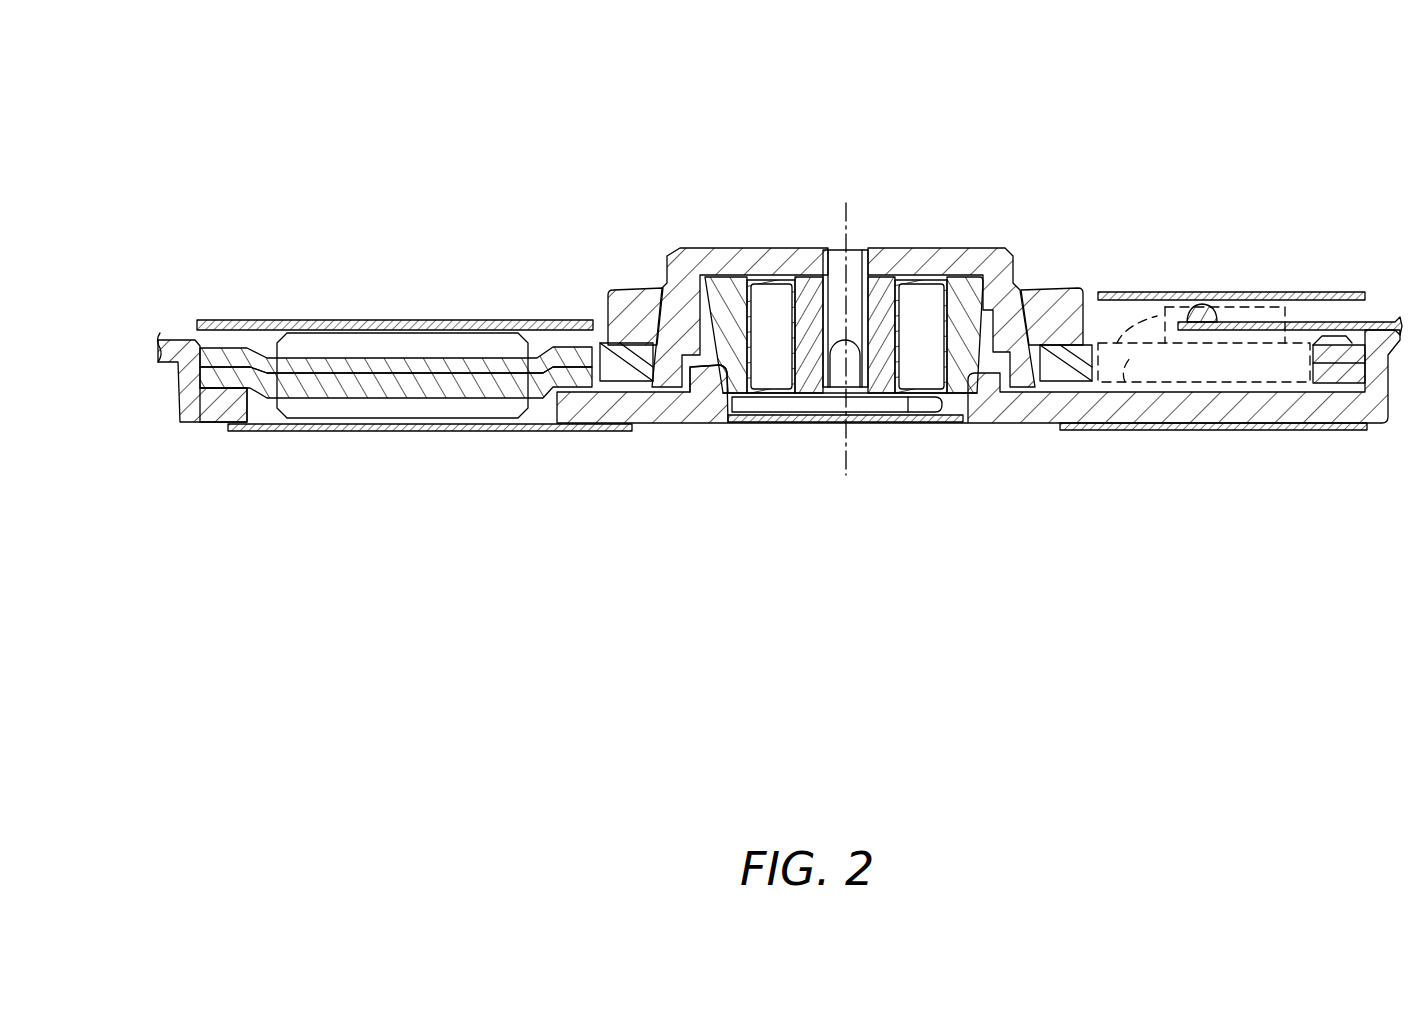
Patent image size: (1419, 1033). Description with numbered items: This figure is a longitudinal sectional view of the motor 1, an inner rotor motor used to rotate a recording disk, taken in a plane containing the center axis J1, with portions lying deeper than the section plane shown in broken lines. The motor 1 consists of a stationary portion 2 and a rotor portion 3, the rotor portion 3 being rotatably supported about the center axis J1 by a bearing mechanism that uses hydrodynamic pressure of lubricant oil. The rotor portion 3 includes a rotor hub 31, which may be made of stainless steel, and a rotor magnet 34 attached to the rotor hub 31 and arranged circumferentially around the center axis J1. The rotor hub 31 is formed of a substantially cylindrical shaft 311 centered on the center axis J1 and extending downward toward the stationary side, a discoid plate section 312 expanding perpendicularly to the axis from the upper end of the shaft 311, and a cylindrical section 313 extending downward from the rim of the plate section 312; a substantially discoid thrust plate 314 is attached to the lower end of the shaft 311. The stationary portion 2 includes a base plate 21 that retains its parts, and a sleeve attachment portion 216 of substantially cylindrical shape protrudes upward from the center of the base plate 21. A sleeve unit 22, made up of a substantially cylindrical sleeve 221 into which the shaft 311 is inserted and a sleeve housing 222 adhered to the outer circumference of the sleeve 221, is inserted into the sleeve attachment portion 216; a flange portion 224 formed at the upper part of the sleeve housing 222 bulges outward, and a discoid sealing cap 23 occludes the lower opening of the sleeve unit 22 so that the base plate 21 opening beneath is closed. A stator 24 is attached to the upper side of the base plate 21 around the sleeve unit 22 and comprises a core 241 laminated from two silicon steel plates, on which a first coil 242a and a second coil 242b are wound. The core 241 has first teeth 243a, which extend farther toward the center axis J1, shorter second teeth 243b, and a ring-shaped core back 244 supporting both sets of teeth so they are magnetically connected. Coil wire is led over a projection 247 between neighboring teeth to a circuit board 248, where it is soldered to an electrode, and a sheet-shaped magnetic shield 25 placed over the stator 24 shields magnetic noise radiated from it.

The motor 1 is at (199, 61).
The stationary portion 2 is at (470, 703).
The rotor portion 3 is at (1142, 117).
The base plate 21 is at (625, 432).
The sleeve attachment portion 216 is at (712, 385).
The sleeve unit 22 is at (752, 625).
The sleeve 221 is at (772, 365).
The sleeve housing 222 is at (738, 352).
The flange portion 224 is at (705, 290).
The sealing cap 23 is at (818, 420).
The stator 24 is at (405, 625).
The core 241 is at (352, 515).
The first coil 242a is at (500, 430).
The second coil 242b is at (1121, 398).
The first teeth 243a is at (397, 425).
The second teeth 243b is at (1160, 410).
The core back 244 is at (243, 428).
The projection 247 is at (229, 318).
The circuit board 248 is at (1255, 327).
The magnetic shield 25 is at (300, 318).
The rotor hub 31 is at (1024, 138).
The shaft 311 is at (882, 305).
The plate section 312 is at (935, 285).
The cylindrical section 313 is at (1015, 265).
The thrust plate 314 is at (910, 403).
The rotor magnet 34 is at (1082, 290).
The center axis J1 is at (835, 215).